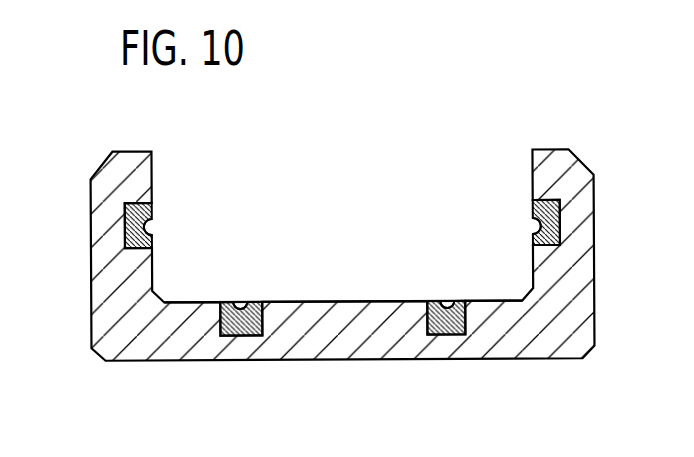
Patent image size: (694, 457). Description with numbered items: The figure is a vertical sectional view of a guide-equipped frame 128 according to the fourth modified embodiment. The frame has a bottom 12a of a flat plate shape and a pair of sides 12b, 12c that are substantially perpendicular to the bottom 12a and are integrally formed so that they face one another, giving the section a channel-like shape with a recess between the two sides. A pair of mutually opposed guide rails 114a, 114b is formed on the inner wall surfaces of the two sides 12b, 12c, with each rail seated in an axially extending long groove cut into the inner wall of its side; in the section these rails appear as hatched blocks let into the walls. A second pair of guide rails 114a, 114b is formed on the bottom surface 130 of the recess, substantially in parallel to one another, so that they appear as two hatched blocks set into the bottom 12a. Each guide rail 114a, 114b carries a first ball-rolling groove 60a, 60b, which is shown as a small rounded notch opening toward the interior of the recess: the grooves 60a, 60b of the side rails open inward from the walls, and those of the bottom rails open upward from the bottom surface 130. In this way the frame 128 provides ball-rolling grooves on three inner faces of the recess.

The guide-equipped frame 128 is at (571, 124).
The bottom 12a is at (338, 343).
The side 12b is at (112, 197).
The side 12c is at (572, 193).
The bottom surface 130 is at (351, 301).
The guide rail 114a is at (127, 230).
The guide rail 114b is at (560, 233).
The first ball-rolling groove 60a is at (247, 310).
The first ball-rolling groove 60b is at (536, 226).